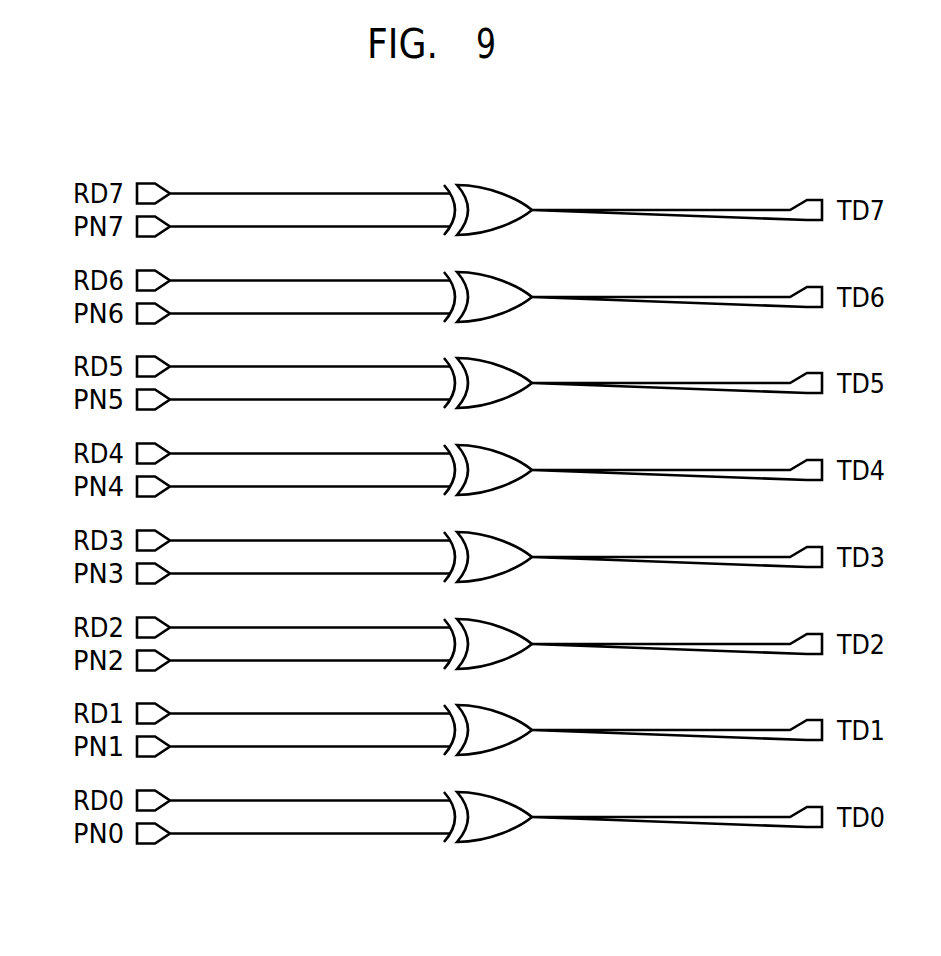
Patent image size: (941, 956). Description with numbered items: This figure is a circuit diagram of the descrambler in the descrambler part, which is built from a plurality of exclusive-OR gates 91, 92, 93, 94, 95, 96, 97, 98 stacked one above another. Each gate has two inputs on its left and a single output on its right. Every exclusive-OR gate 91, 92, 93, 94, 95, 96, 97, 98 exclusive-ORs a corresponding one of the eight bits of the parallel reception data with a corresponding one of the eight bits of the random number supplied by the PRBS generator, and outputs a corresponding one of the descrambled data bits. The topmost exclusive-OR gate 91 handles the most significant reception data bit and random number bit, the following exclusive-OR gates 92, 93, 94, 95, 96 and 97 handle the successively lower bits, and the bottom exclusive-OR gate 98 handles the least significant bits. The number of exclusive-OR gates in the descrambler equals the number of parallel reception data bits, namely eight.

The exclusive-OR gate 91 is at (488, 210).
The exclusive-OR gate 92 is at (488, 297).
The exclusive-OR gate 93 is at (488, 383).
The exclusive-OR gate 94 is at (488, 470).
The exclusive-OR gate 95 is at (488, 557).
The exclusive-OR gate 96 is at (488, 644).
The exclusive-OR gate 97 is at (488, 730).
The exclusive-OR gate 98 is at (488, 817).